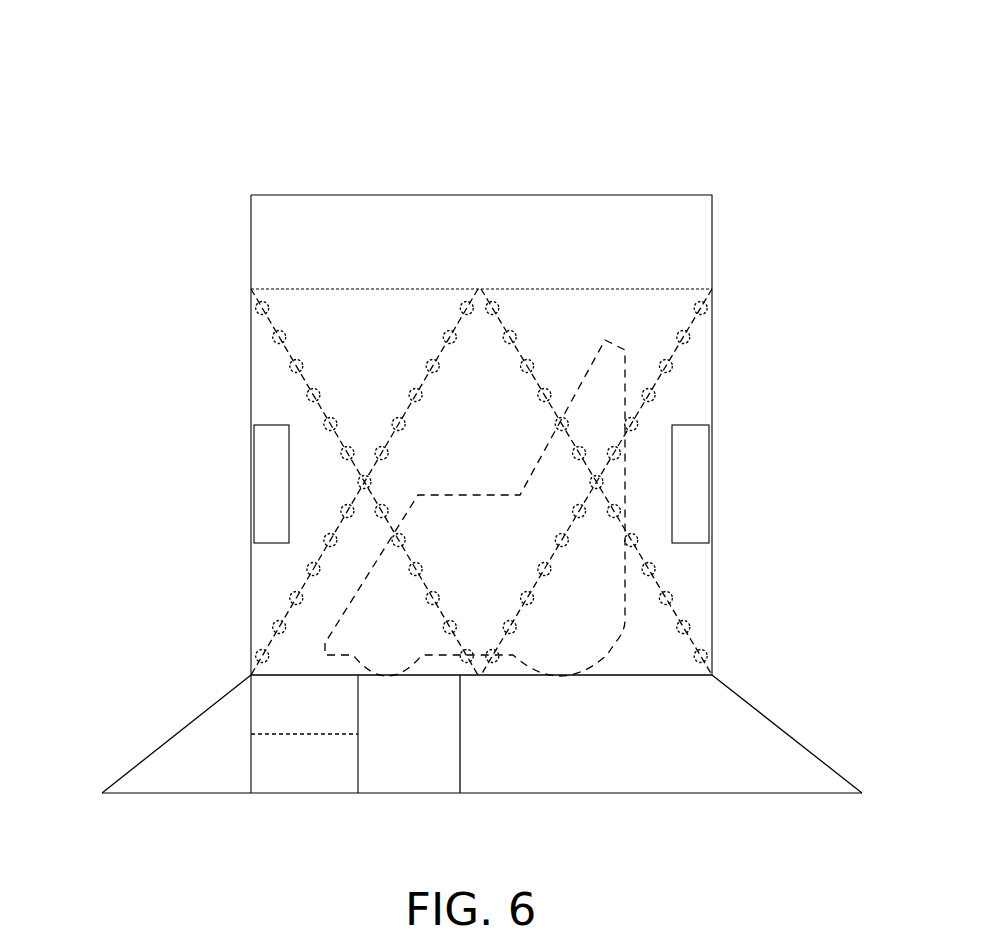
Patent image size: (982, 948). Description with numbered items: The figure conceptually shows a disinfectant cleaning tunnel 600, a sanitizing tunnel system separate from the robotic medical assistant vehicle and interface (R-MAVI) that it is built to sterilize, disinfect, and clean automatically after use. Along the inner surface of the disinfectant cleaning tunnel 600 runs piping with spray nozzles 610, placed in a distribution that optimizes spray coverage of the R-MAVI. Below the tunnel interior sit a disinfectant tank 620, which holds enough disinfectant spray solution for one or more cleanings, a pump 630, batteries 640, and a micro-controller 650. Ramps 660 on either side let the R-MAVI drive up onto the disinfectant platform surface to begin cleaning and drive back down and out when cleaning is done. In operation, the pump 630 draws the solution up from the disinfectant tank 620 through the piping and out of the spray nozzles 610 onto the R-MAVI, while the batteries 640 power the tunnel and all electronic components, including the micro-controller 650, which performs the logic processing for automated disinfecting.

The disinfectant cleaning tunnel 600 is at (177, 112).
The piping with spray nozzles 610 is at (277, 333).
The disinfectant tank 620 is at (528, 773).
The pump 630 is at (410, 773).
The batteries 640 is at (297, 773).
The micro-controller 650 is at (278, 703).
The ramps 660 is at (176, 735).